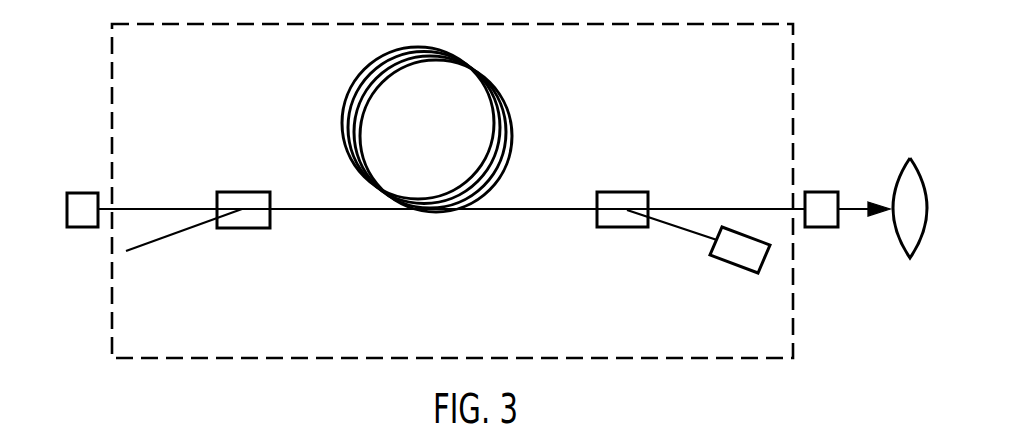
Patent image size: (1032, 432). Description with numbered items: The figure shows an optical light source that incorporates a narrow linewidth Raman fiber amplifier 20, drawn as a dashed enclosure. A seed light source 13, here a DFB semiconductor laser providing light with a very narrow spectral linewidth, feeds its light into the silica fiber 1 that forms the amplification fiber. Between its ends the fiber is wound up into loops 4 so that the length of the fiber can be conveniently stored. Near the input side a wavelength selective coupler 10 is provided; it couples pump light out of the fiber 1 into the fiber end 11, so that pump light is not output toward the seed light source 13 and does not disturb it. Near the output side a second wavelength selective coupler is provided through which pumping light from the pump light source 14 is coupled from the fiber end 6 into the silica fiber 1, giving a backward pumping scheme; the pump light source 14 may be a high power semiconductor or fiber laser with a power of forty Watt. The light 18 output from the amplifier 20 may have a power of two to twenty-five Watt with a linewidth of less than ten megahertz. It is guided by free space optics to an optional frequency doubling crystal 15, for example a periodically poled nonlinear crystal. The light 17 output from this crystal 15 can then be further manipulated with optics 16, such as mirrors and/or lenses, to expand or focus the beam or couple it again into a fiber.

The silica fiber 1 is at (333, 210).
The loops 4 is at (487, 80).
The fiber end 6 is at (667, 228).
The coupler 10 is at (250, 229).
The fiber end 11 is at (178, 233).
The seed light source 13 is at (82, 192).
The pump light source 14 is at (728, 264).
The frequency doubling crystal 15 is at (818, 191).
The optics 16 is at (908, 259).
The light 17 is at (852, 206).
The light 18 is at (769, 207).
The amplifier 20 is at (762, 359).